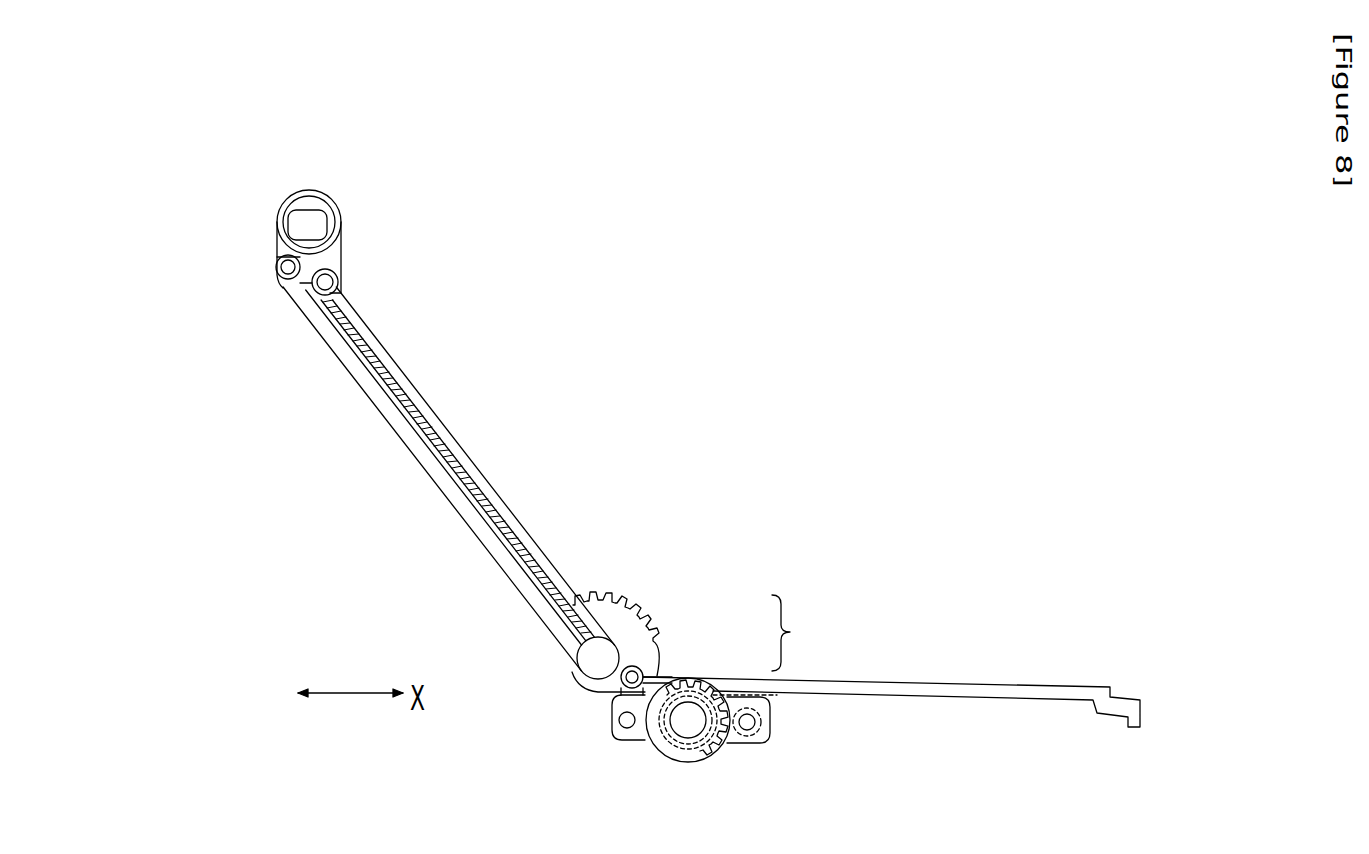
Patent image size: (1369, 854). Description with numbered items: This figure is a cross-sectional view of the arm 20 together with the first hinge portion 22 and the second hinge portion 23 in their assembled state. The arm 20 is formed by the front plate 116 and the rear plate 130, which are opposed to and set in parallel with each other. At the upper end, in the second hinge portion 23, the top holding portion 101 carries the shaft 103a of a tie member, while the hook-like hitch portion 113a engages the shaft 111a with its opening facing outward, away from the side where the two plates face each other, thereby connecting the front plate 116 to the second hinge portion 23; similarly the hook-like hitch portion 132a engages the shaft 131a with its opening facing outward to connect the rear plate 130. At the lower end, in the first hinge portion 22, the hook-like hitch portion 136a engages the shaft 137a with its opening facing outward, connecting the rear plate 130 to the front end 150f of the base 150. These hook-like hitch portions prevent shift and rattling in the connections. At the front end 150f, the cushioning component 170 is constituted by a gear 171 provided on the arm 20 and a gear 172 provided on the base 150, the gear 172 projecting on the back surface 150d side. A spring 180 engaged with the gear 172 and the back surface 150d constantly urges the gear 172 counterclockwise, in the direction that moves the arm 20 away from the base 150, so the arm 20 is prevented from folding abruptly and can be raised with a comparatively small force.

The second hinge portion 23 is at (305, 187).
The top holding portion 101 is at (337, 207).
The shaft 103a is at (303, 248).
The hitch portion 113a is at (277, 256).
The shaft 111a is at (282, 278).
The hitch portion 132a is at (340, 280).
The shaft 131a is at (337, 289).
The arm 20 is at (477, 453).
The front plate 116 is at (490, 548).
The rear plate 130 is at (480, 487).
The first hinge portion 22 is at (567, 675).
The shaft 137a is at (631, 737).
The hitch portion 136a is at (621, 668).
The front end 150f is at (603, 695).
The spring 180 is at (773, 697).
The gear 171 is at (643, 637).
The gear 172 is at (670, 672).
The cushioning component 170 is at (807, 633).
The base 150 is at (977, 680).
The back surface 150d is at (893, 693).